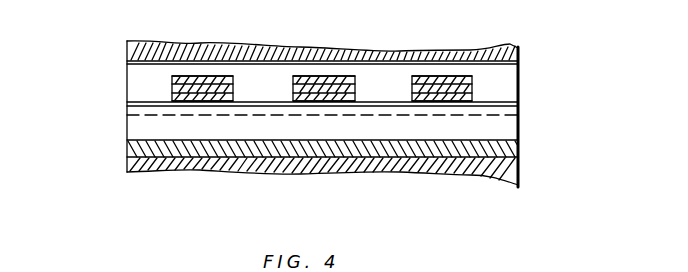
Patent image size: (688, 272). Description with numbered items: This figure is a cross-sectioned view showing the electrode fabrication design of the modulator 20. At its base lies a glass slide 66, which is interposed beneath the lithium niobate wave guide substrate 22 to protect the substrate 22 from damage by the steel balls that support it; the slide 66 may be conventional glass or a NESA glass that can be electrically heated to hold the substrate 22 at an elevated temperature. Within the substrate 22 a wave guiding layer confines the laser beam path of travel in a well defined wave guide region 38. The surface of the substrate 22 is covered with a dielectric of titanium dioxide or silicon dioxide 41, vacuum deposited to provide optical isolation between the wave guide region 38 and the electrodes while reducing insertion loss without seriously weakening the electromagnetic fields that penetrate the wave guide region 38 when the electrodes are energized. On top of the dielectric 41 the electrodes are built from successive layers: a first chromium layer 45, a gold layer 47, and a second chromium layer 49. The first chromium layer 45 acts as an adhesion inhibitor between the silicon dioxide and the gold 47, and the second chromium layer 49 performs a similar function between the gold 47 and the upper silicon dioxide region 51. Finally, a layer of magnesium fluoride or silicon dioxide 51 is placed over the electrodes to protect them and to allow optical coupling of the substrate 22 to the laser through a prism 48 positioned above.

The modulator 20 is at (201, 172).
The lithium niobate wave guide substrate 22 is at (522, 138).
The wave guide region 38 is at (520, 117).
The titanium dioxide or silicon dioxide dielectric 41 is at (520, 96).
The first chromium layer 45 is at (215, 96).
The gold layer 47 is at (233, 91).
The prism 48 is at (391, 51).
The second chromium layer 49 is at (205, 76).
The upper silicon dioxide or magnesium fluoride layer 51 is at (140, 82).
The glass slide 66 is at (130, 153).